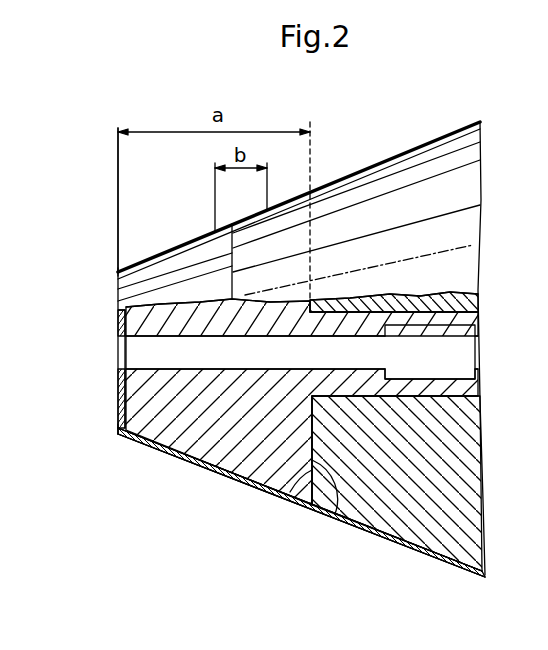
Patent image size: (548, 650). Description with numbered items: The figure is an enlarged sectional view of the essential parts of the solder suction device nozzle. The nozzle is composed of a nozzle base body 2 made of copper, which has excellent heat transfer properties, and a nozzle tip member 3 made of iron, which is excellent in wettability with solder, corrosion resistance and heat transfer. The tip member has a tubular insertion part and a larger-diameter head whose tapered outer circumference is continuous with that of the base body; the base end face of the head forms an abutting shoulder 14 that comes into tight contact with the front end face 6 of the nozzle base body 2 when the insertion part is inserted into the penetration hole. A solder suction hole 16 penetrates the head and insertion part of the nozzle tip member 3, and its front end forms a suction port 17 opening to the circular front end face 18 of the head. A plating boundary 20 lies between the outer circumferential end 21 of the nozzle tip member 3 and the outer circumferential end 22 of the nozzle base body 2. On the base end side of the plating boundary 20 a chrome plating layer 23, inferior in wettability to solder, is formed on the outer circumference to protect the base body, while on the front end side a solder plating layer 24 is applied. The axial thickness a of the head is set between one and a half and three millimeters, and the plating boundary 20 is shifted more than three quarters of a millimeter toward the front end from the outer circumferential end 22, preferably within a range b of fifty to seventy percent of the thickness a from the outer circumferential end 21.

The nozzle base body 2 is at (458, 550).
The nozzle tip member 3 is at (265, 470).
The front end face 6 is at (302, 498).
The abutting shoulder 14 is at (334, 512).
The solder suction hole 16 is at (150, 436).
The suction port 17 is at (120, 359).
The front end face 18 is at (120, 322).
The plating boundary 20 is at (232, 263).
The outer circumferential end 21 is at (118, 270).
The outer circumferential end 22 is at (312, 500).
The chrome plating layer 23 is at (387, 540).
The solder plating layer 24 is at (183, 456).